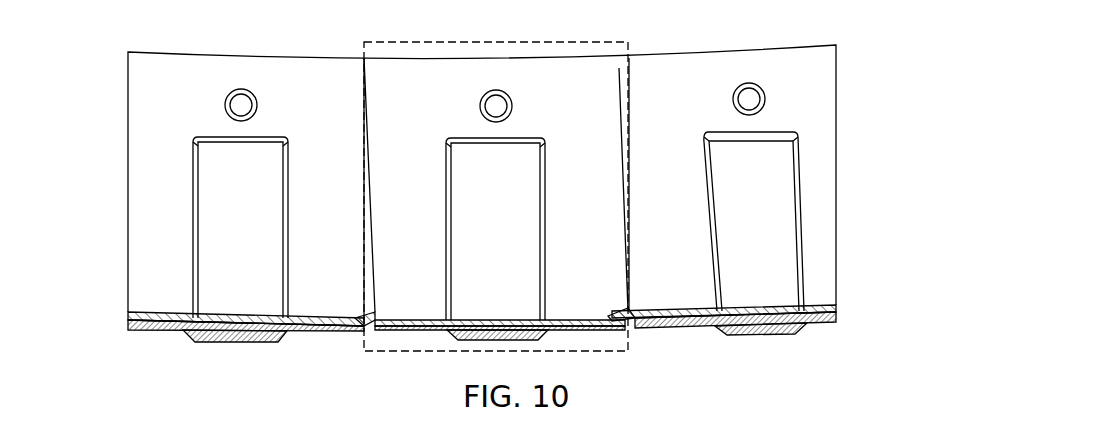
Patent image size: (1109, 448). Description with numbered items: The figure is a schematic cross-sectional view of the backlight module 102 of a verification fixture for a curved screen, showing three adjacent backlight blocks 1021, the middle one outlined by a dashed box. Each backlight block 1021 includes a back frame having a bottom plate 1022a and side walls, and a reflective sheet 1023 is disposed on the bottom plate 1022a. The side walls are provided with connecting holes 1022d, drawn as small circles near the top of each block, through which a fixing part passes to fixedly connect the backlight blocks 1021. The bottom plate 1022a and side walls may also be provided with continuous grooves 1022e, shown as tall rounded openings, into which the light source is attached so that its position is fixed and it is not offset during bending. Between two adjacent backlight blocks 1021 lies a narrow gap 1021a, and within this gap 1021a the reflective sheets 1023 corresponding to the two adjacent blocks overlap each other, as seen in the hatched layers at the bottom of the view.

The frame 102 is at (140, 30).
The backlight block 1021 is at (616, 50).
The gap 1021a is at (366, 158).
The bottom plate 1022a is at (836, 320).
The connecting hole 1022d is at (749, 99).
The continuous groove 1022e is at (785, 208).
The reflective sheet 1023 is at (836, 306).